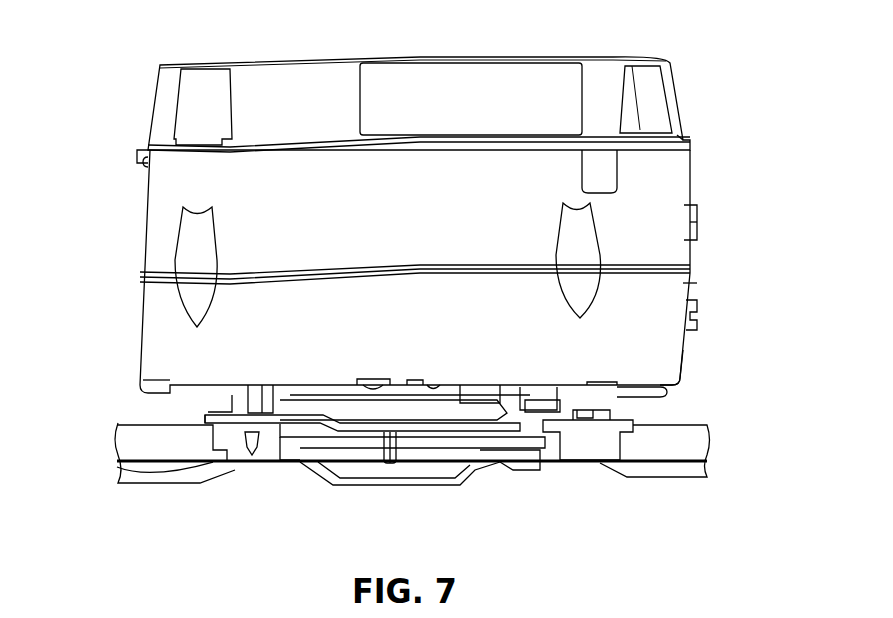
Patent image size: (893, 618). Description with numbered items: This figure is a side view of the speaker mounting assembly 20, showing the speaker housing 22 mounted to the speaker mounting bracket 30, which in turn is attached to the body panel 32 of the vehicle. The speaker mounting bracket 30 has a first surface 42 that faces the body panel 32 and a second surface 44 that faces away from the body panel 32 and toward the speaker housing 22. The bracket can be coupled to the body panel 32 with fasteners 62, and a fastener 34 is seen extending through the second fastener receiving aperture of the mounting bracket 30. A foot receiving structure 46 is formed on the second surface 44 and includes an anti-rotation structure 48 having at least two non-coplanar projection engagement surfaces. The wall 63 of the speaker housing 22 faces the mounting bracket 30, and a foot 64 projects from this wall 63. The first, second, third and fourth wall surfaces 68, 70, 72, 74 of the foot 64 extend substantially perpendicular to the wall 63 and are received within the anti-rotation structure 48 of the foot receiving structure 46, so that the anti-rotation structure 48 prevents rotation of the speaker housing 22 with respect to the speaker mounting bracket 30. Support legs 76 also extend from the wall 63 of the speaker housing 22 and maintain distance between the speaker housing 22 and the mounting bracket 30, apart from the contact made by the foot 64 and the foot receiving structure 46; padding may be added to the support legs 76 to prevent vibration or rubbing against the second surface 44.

The speaker mounting assembly 20 is at (136, 77).
The speaker housing 22 is at (274, 91).
The speaker mounting bracket 30 is at (245, 418).
The body panel 32 is at (117, 442).
The fastener 34 is at (382, 447).
The first surface 42 is at (289, 463).
The second surface 44 is at (548, 403).
The foot receiving structure 46 is at (410, 412).
The anti-rotation structure 48 is at (450, 413).
The fasteners 62 is at (250, 463).
The wall 63 is at (678, 390).
The foot 64 is at (453, 393).
The first wall surface 68 is at (287, 395).
The second wall surface 70 is at (420, 393).
The third wall surface 72 is at (353, 397).
The fourth wall surface 74 is at (490, 390).
The support legs 76 is at (252, 402).